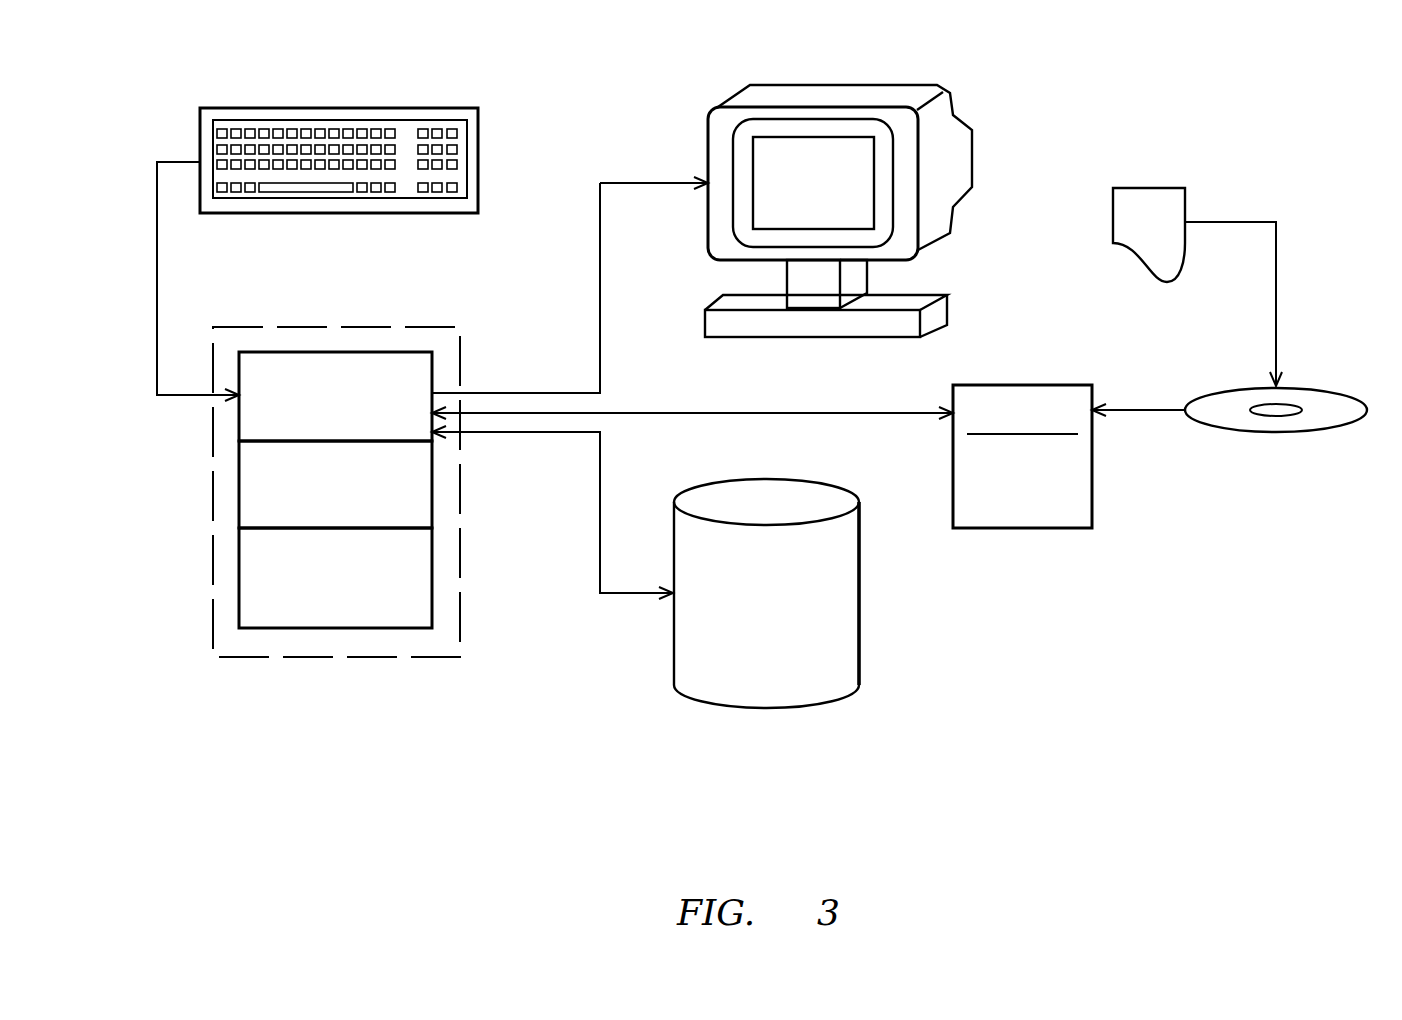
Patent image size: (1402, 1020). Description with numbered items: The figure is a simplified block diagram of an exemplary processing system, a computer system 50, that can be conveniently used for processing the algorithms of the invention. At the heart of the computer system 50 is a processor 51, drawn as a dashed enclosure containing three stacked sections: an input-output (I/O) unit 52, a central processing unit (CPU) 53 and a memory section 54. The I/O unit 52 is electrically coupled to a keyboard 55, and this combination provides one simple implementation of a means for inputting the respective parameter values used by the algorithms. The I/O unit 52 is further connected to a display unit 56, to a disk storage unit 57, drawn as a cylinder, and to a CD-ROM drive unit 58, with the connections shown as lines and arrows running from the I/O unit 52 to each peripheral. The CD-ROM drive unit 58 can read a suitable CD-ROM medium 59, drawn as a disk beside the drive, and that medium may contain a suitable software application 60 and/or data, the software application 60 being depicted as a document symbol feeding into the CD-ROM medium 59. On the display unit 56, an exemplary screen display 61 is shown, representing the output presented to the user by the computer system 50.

The computer system 50 is at (1028, 117).
The processor 51 is at (373, 325).
The input-output (I/O) unit 52 is at (323, 362).
The central processing unit (CPU) 53 is at (420, 513).
The memory section 54 is at (420, 592).
The keyboard 55 is at (432, 108).
The display unit 56 is at (708, 133).
The disk storage unit 57 is at (859, 603).
The CD-ROM drive unit 58 is at (1022, 385).
The CD-ROM medium 59 is at (1307, 388).
The software application 60 is at (1113, 197).
The screen display 61 is at (825, 157).